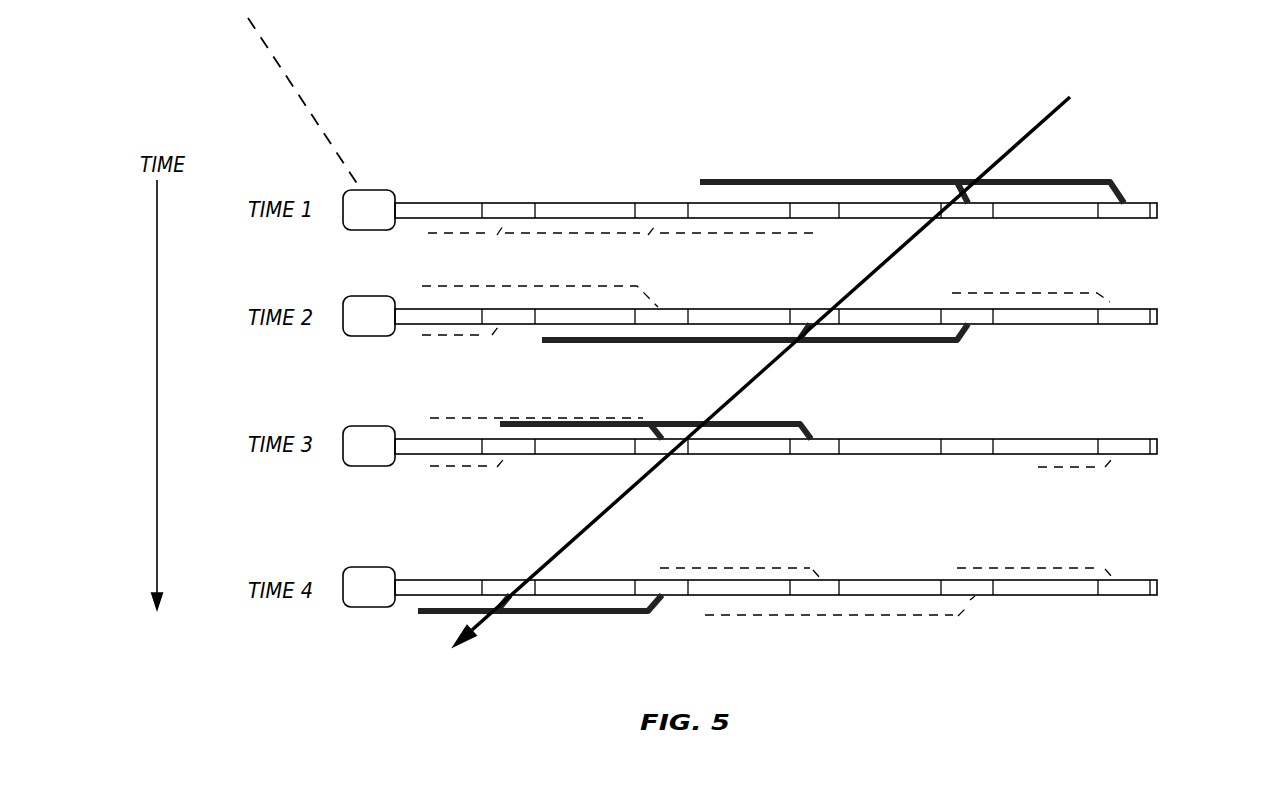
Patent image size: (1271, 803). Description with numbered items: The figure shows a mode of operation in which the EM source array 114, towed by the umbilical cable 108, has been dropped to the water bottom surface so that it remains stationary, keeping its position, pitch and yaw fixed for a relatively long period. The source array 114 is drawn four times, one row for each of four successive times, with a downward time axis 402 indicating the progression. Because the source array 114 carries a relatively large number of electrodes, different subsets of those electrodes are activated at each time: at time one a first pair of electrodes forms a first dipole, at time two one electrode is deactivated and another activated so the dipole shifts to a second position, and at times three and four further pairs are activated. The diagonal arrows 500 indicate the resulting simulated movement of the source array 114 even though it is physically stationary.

The umbilical cable 108 is at (326, 103).
The EM source array 114 is at (1180, 199).
The time axis 402 is at (115, 395).
The arrows 500 is at (761, 372).